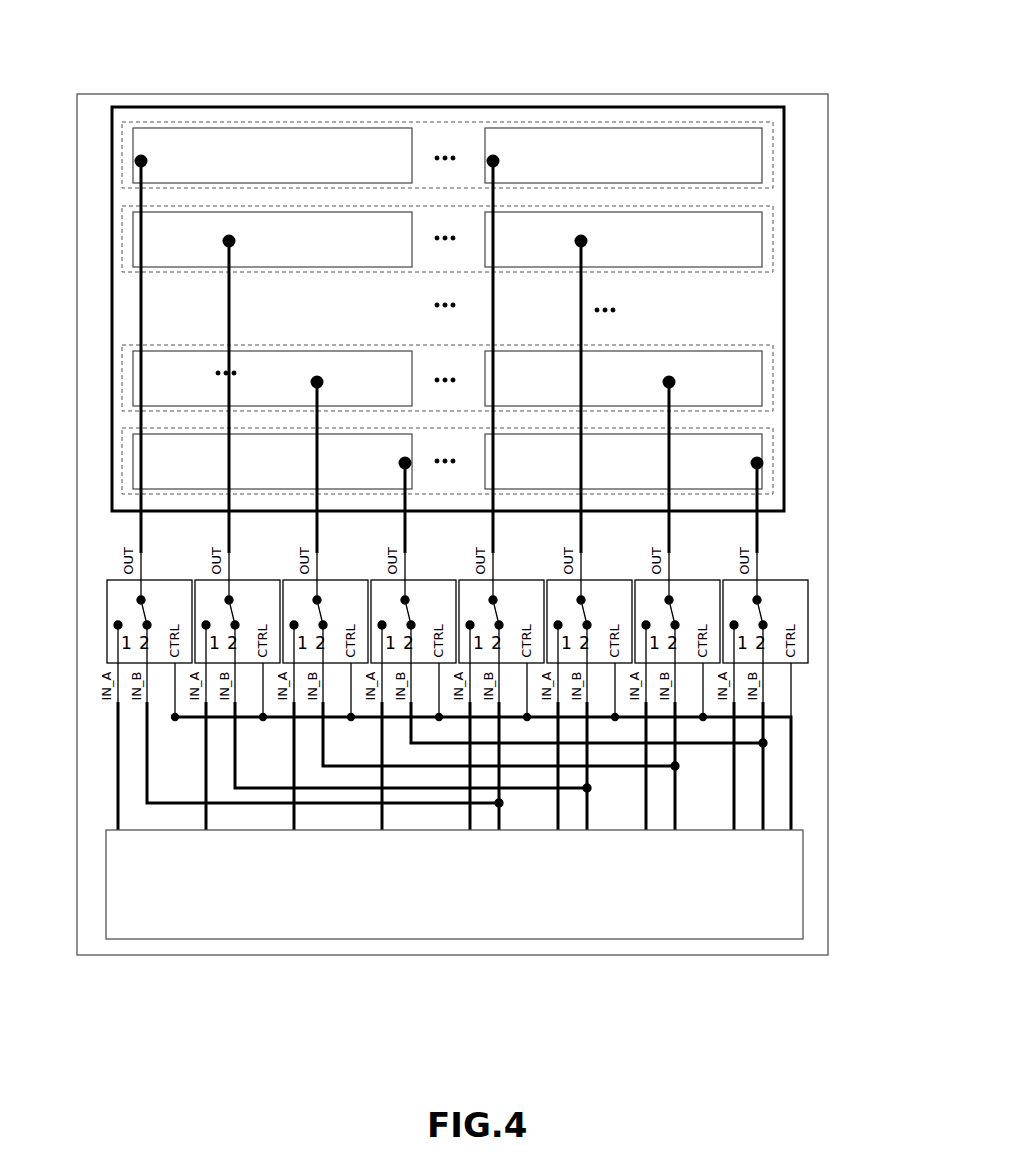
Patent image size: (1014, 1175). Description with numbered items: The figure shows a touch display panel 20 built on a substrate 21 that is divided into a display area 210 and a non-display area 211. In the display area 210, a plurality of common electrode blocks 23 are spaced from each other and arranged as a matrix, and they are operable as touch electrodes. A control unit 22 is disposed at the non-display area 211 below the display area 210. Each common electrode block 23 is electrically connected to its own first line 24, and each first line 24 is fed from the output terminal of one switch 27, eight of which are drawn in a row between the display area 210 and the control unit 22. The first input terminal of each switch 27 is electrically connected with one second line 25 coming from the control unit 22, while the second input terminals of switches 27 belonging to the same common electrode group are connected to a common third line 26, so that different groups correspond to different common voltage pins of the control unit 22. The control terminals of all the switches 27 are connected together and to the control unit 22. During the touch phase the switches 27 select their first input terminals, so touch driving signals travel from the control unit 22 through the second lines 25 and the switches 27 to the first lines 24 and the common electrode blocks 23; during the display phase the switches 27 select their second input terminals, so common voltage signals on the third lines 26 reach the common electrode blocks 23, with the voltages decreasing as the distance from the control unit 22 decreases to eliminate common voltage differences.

The touch display panel 20 is at (108, 36).
The substrate 21 is at (828, 117).
The display area 210 is at (762, 298).
The non-display area 211 is at (800, 547).
The control unit 22 is at (222, 921).
The common electrode block 23 is at (743, 234).
The first line 24 is at (578, 327).
The second line 25 is at (119, 772).
The third line 26 is at (763, 800).
The switch 27 is at (800, 617).